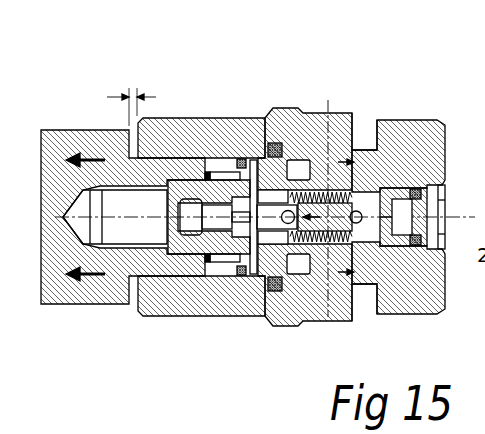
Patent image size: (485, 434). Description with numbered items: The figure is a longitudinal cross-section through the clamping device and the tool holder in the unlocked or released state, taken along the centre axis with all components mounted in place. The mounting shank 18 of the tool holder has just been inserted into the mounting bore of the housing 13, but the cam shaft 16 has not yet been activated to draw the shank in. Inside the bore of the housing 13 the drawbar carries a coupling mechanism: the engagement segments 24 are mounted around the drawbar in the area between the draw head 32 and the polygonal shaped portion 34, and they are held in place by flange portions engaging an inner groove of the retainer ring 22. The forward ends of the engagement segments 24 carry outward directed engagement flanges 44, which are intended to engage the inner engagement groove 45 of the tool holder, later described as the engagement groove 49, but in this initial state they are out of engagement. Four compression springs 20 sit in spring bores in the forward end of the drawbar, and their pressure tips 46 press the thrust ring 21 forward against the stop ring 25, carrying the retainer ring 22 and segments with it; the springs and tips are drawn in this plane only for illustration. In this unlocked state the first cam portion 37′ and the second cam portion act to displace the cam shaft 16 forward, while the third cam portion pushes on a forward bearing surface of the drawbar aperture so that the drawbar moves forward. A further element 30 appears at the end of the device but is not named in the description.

The housing 13 is at (147, 300).
The mounting shank 18 is at (157, 165).
The draw head 32 is at (188, 185).
The engagement segments 24 is at (230, 250).
The inner engagement groove 45 is at (204, 176).
The engagement flanges 44 is at (203, 252).
The stop ring 25 is at (245, 275).
The thrust ring 21 is at (256, 260).
The polygonal shaped portion 34 is at (281, 173).
The retainer ring 22 is at (238, 158).
The pressure tips 46 is at (272, 197).
The compression springs 20 is at (322, 192).
The engagement groove 49 is at (328, 108).
The cam shaft 16 is at (350, 119).
The first cam portion 37′ is at (354, 172).
The connection piece 30 is at (452, 215).